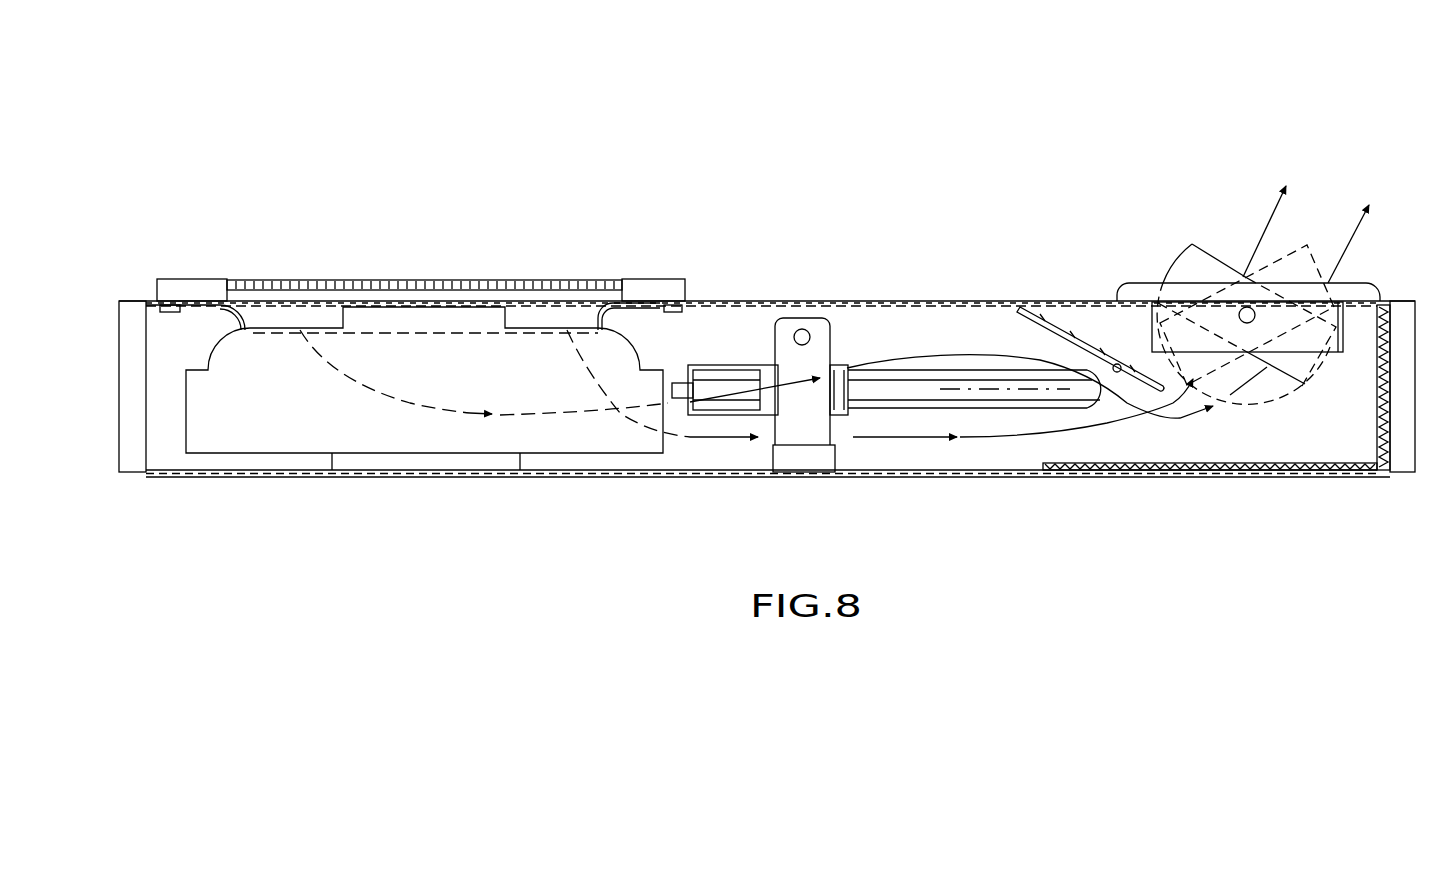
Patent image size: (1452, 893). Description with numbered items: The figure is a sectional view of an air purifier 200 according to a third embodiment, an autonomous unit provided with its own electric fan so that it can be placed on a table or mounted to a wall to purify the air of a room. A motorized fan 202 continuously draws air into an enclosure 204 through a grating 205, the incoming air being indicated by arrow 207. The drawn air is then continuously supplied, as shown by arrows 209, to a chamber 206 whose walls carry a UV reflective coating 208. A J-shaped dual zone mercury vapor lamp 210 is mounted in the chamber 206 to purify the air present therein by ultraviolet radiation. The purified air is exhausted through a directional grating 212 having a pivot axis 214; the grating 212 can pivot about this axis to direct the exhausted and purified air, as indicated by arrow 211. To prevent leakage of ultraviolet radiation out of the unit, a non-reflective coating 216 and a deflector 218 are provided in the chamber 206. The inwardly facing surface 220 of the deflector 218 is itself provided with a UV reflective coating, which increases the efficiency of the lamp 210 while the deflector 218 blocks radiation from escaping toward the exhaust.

The air purifier 200 is at (504, 150).
The motorized fan 202 is at (343, 430).
The enclosure 204 is at (218, 478).
The grating 205 is at (417, 280).
The chamber 206 is at (957, 340).
The arrow 207 is at (293, 316).
The UV reflective coating 208 is at (948, 470).
The arrows 209 is at (887, 363).
The J-shaped dual zone mercury vapor lamp 210 is at (1020, 413).
The arrow 211 is at (1357, 238).
The directional grating 212 is at (1303, 277).
The pivot axis 214 is at (1246, 307).
The non-reflective coating 216 is at (1206, 470).
The deflector 218 is at (1057, 310).
The inwardly facing surface 220 is at (1114, 363).